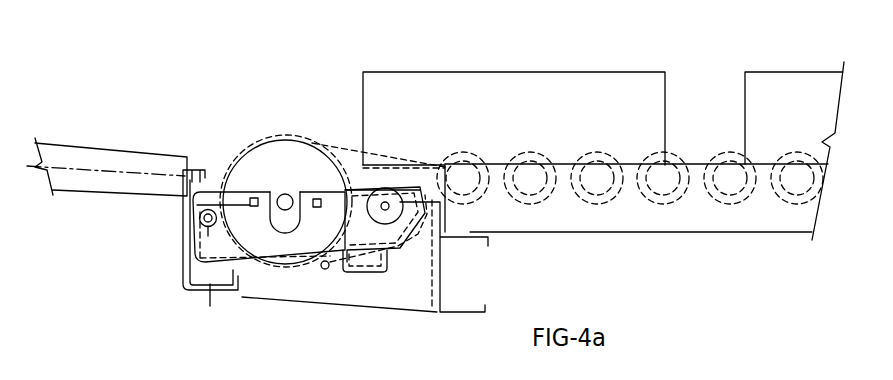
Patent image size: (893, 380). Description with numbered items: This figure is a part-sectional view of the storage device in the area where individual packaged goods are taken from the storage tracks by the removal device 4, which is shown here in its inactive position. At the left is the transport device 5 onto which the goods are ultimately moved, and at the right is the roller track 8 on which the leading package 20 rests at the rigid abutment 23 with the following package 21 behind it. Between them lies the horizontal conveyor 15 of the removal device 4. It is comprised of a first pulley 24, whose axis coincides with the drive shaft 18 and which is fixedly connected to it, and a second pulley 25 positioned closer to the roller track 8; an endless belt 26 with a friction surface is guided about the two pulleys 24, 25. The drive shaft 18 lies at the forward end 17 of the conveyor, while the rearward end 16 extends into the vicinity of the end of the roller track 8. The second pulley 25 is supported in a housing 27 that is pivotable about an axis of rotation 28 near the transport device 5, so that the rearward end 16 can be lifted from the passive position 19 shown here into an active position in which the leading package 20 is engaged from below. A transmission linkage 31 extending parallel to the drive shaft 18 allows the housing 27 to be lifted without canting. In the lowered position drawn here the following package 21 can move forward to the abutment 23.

The removal device 4 is at (175, 300).
The transport device 5 is at (72, 143).
The roller track 8 is at (696, 236).
The horizontal conveyor 15 is at (228, 142).
The rearward end 16 is at (402, 185).
The forward end 17 is at (253, 147).
The drive shaft 18 is at (283, 198).
The passive position 19 is at (335, 152).
The leading package 20 is at (585, 90).
The following package 21 is at (797, 80).
The abutment 23 is at (362, 165).
The first pulley 24 is at (228, 232).
The second pulley 25 is at (384, 212).
The endless belt 26 is at (357, 240).
The housing 27 is at (215, 253).
The axis of rotation 28 is at (200, 218).
The transmission linkage 31 is at (322, 268).